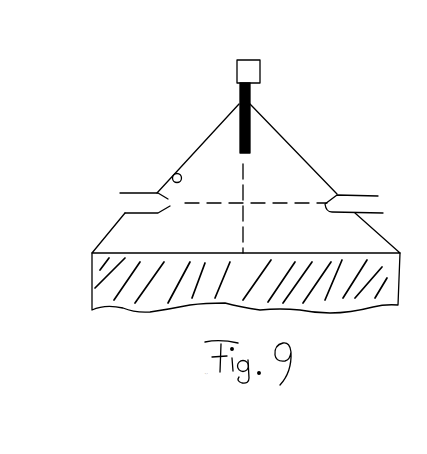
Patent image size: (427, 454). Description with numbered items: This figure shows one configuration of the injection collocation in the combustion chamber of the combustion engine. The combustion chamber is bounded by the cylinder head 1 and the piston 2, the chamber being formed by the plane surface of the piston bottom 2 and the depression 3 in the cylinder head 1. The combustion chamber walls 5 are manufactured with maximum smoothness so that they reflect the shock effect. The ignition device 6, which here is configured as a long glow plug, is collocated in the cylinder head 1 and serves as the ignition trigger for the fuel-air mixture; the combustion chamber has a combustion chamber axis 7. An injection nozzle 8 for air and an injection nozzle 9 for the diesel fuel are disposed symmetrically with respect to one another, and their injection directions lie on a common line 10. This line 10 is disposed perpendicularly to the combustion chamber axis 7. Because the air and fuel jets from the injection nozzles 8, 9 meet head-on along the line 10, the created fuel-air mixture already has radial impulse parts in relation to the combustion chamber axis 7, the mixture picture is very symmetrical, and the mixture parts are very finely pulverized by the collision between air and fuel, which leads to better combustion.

The cylinder head 1 is at (212, 130).
The piston 2 is at (97, 290).
The depression 3 is at (254, 224).
The combustion chamber walls 5 is at (173, 176).
The ignition device 6 is at (237, 76).
The combustion chamber axis 7 is at (243, 170).
The injection nozzle for air 8 is at (142, 202).
The injection nozzle for diesel fuel 9 is at (351, 212).
The line 10 is at (273, 203).